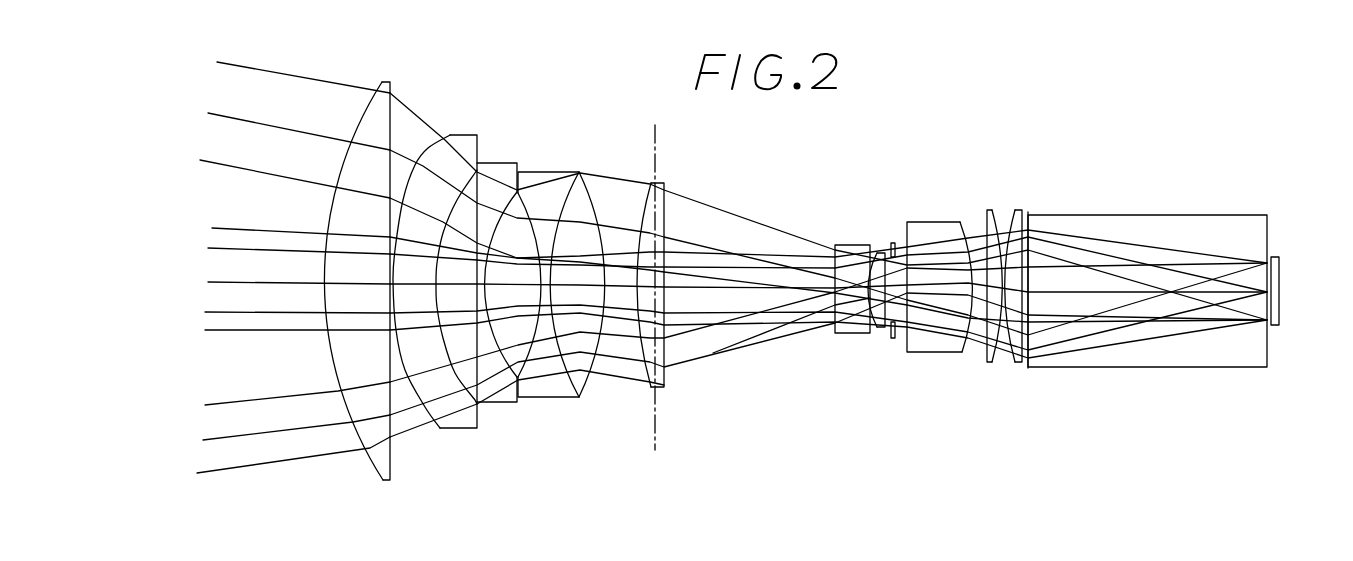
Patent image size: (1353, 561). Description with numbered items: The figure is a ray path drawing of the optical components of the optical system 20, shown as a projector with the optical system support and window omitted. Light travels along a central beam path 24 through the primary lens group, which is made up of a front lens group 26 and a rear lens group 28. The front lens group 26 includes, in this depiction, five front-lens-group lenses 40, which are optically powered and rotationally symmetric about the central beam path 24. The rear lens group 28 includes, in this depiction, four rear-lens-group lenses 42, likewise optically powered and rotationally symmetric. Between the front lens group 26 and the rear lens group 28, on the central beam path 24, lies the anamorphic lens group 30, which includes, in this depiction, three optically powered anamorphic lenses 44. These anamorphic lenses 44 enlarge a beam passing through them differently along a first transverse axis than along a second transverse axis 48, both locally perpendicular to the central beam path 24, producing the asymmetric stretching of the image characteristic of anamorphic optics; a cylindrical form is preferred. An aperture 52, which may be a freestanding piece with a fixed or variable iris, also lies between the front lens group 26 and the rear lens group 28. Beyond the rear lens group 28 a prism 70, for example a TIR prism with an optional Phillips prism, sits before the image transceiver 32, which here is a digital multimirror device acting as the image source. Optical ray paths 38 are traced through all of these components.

The optical system 20 is at (258, 38).
The central beam path 24 is at (216, 281).
The front lens group 26 is at (380, 75).
The rear lens group 28 is at (1027, 195).
The anamorphic lens group 30 is at (728, 204).
The image transceiver 32 is at (1282, 292).
The optical ray paths 38 is at (268, 184).
The front-lens-group lenses 40 is at (390, 459).
The rear-lens-group lenses 42 is at (1017, 364).
The anamorphic lenses 44 is at (664, 380).
The second transverse axis 48 is at (657, 428).
The aperture 52 is at (893, 249).
The prism 70 is at (1163, 367).